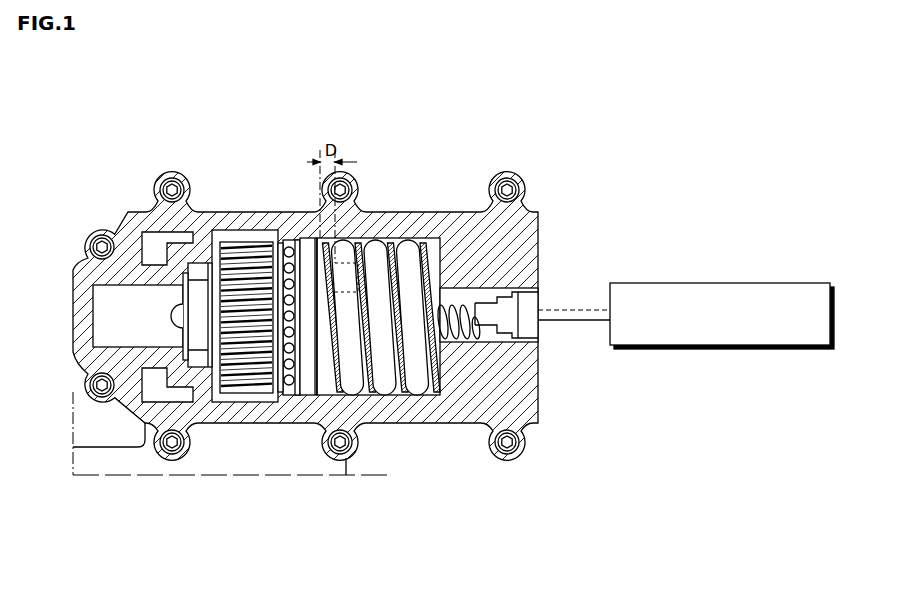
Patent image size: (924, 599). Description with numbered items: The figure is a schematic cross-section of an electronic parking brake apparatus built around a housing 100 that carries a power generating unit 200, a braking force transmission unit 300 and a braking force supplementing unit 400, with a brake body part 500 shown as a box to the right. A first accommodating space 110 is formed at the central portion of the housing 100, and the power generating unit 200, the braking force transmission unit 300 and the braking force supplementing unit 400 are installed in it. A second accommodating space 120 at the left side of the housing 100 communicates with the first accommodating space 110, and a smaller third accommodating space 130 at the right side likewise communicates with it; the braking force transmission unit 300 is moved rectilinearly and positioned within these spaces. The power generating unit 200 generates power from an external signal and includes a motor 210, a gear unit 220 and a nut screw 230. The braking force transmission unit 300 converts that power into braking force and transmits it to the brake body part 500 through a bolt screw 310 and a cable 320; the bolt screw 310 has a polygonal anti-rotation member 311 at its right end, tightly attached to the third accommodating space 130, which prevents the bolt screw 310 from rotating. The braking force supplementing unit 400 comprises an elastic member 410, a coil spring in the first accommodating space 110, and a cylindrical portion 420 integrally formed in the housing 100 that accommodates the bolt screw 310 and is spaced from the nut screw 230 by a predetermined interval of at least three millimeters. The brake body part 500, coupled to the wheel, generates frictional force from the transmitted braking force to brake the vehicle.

The housing 100 is at (537, 147).
The first accommodating space 110 is at (230, 236).
The second accommodating space 120 is at (131, 318).
The third accommodating space 130 is at (450, 343).
The power generating unit 200 is at (248, 403).
The motor 210 is at (198, 532).
The gear unit 220 is at (237, 368).
The nut screw 230 is at (307, 367).
The braking force transmission unit 300 is at (549, 409).
The bolt screw 310 is at (483, 322).
The anti-rotation member 311 is at (505, 327).
The cable 320 is at (574, 315).
The braking force supplementing unit 400 is at (388, 248).
The elastic member 410 is at (366, 255).
The cylindrical portion 420 is at (421, 254).
The brake body part 500 is at (722, 316).